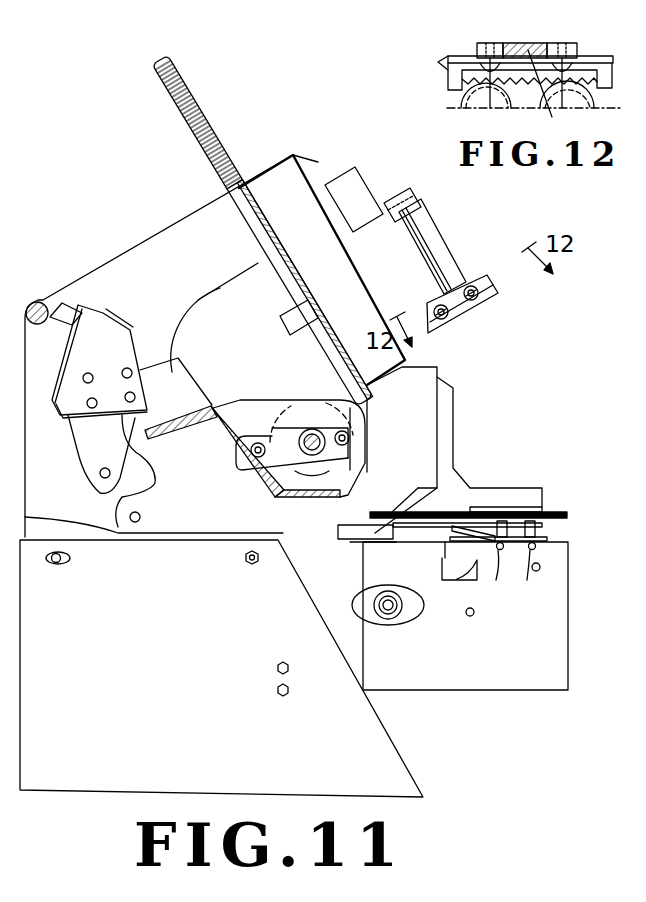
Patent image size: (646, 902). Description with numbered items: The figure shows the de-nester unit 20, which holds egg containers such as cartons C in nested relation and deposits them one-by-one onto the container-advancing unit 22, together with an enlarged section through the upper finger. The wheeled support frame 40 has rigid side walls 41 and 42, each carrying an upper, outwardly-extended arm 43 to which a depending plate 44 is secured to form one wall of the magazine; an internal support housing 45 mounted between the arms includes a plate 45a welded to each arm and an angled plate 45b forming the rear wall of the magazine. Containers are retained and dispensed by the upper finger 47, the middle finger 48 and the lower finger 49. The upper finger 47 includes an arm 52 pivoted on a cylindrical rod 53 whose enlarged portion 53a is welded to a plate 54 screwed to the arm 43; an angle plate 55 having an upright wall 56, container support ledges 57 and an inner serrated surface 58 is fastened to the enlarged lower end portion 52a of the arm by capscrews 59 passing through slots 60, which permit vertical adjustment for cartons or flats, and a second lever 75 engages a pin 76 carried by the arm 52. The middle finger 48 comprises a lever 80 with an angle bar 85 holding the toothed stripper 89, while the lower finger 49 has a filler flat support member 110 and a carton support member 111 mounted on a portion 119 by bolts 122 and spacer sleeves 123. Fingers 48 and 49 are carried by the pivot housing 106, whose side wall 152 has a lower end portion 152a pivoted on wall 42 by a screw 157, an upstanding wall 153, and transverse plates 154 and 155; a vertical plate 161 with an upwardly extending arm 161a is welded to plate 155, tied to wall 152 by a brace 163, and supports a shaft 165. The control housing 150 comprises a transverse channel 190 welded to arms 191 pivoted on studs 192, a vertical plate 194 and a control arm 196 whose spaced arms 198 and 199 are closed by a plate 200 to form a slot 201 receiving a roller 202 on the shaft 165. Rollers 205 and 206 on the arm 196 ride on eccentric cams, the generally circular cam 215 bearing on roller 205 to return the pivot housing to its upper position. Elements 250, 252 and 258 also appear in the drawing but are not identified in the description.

In FIG. 11, the de-nester unit 20 is at (116, 208).
In FIG. 11, the container-advancing unit 22 is at (513, 724).
In FIG. 11, the wheeled support frame 40 is at (180, 706).
In FIG. 11, the side wall 41 is at (70, 555).
In FIG. 11, the side wall 42 is at (40, 504).
In FIG. 11, the upper outwardly-extended arm 43 is at (318, 162).
In FIG. 11, the plate 44 is at (298, 215).
In FIG. 11, the internal support housing 45 is at (196, 216).
In FIG. 11, the plate 45a is at (212, 262).
In FIG. 11, the plate 45b is at (324, 308).
In FIG. 11, the upper finger 47 is at (436, 233).
In FIG. 12, the upper finger 47 is at (440, 71).
In FIG. 11, the middle finger 48 is at (466, 476).
In FIG. 11, the lower finger 49 is at (518, 552).
In FIG. 11, the arm 52 is at (432, 253).
In FIG. 12, the arm 52 is at (533, 89).
In FIG. 11, the enlarged lower end portion 52a is at (462, 286).
In FIG. 12, the enlarged lower end portion 52a is at (477, 49).
In FIG. 11, the cylindrical rod 53 is at (398, 198).
In FIG. 11, the enlarged portion 53a is at (386, 234).
In FIG. 11, the plate 54 is at (341, 183).
In FIG. 11, the angle plate 55 is at (497, 303).
In FIG. 12, the angle plate 55 is at (455, 80).
In FIG. 11, the upright wall 56 is at (495, 295).
In FIG. 12, the upright wall 56 is at (450, 60).
In FIG. 12, the container support ledges 57 is at (458, 93).
In FIG. 12, the inner serrated surface 58 is at (488, 95).
In FIG. 11, the capscrews 59 is at (490, 288).
In FIG. 12, the capscrews 59 is at (502, 88).
In FIG. 11, the slots 60 is at (453, 314).
In FIG. 11, the second lever 75 is at (414, 266).
In FIG. 11, the pin 76 is at (420, 284).
In FIG. 11, the lever 80 is at (448, 432).
In FIG. 11, the angle bar 85 is at (498, 503).
In FIG. 11, the toothed stripper 89 is at (533, 505).
In FIG. 11, the pivot housing 106 is at (438, 416).
In FIG. 11, the filler flat support member 110 is at (560, 516).
In FIG. 11, the carton support member 111 is at (548, 541).
In FIG. 11, the portion of arm 119 is at (436, 540).
In FIG. 11, the bolts 122 is at (538, 550).
In FIG. 11, the spacer sleeves 123 is at (540, 530).
In FIG. 11, the control housing 150 is at (80, 328).
In FIG. 11, the side wall 152 is at (300, 527).
In FIG. 11, the lower end portion 152a is at (120, 533).
In FIG. 11, the upstanding wall 153 is at (378, 408).
In FIG. 11, the transverse plate 154 is at (175, 425).
In FIG. 11, the transverse plate 155 is at (257, 477).
In FIG. 11, the screw 157 is at (140, 517).
In FIG. 11, the vertical plate 161 is at (347, 482).
In FIG. 11, the upwardly extending arm 161a is at (292, 322).
In FIG. 11, the brace 163 is at (368, 458).
In FIG. 11, the shaft 165 is at (311, 430).
In FIG. 11, the transverse channel 190 is at (72, 378).
In FIG. 11, the arm 191 is at (107, 456).
In FIG. 11, the stud 192 is at (100, 473).
In FIG. 11, the vertical plate 194 is at (125, 343).
In FIG. 11, the control arm 196 is at (176, 368).
In FIG. 11, the spaced arm 198 is at (245, 470).
In FIG. 11, the spaced arm 199 is at (367, 420).
In FIG. 11, the plate 200 is at (366, 478).
In FIG. 11, the slot 201 is at (242, 448).
In FIG. 11, the roller 202 is at (290, 425).
In FIG. 11, the roller 205 is at (242, 455).
In FIG. 11, the roller 206 is at (368, 440).
In FIG. 11, the generally circular cam 215 is at (302, 497).
In FIG. 11, the base block 250 is at (482, 688).
In FIG. 11, the mounting block 252 is at (477, 662).
In FIG. 11, the bracket 258 is at (485, 562).
In FIG. 12, the cartons C is at (458, 110).